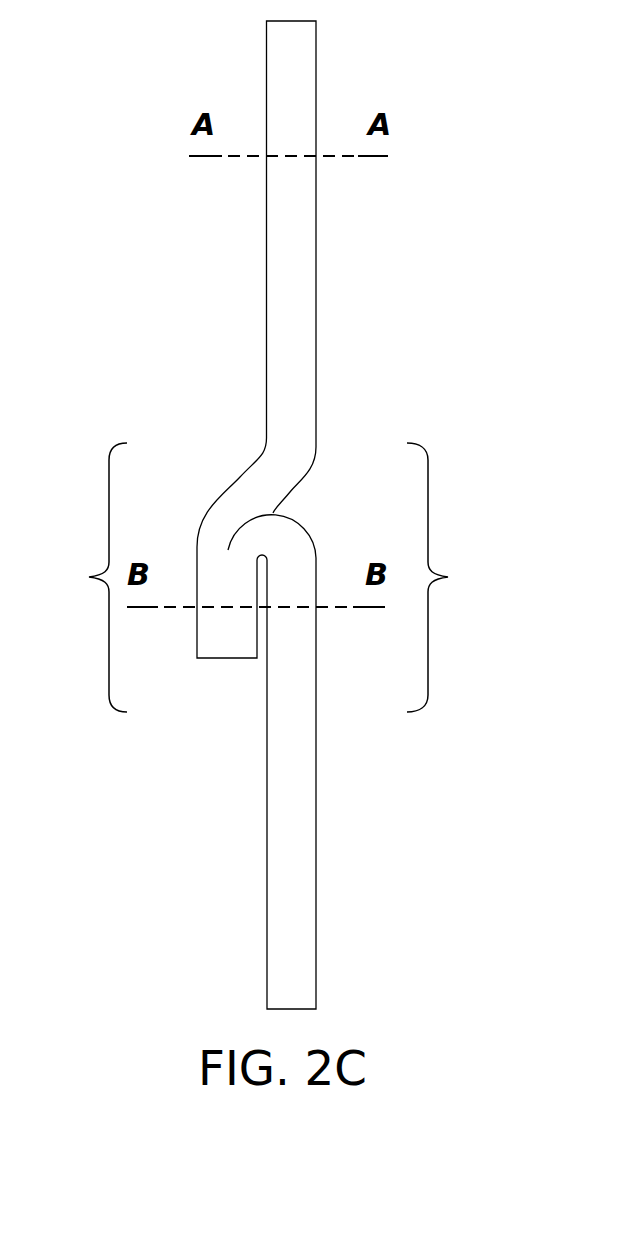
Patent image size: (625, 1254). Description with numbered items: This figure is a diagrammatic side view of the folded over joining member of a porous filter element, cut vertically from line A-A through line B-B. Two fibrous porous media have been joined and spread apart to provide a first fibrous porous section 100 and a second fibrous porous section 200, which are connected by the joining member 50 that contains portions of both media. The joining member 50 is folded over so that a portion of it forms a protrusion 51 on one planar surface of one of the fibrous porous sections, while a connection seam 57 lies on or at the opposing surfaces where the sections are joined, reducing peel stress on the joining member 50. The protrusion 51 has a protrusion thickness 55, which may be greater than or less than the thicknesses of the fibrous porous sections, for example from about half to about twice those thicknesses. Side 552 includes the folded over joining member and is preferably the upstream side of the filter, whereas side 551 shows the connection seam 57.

The first fibrous porous section 100 is at (295, 257).
The second fibrous porous section 200 is at (292, 780).
The joining member 50 is at (213, 491).
The connection seam 57 is at (307, 503).
The protrusion 51 is at (228, 582).
The protrusion thickness 55 is at (257, 670).
The side showing the connection seam 551 is at (459, 577).
The side including the folded over joining member 552 is at (82, 577).